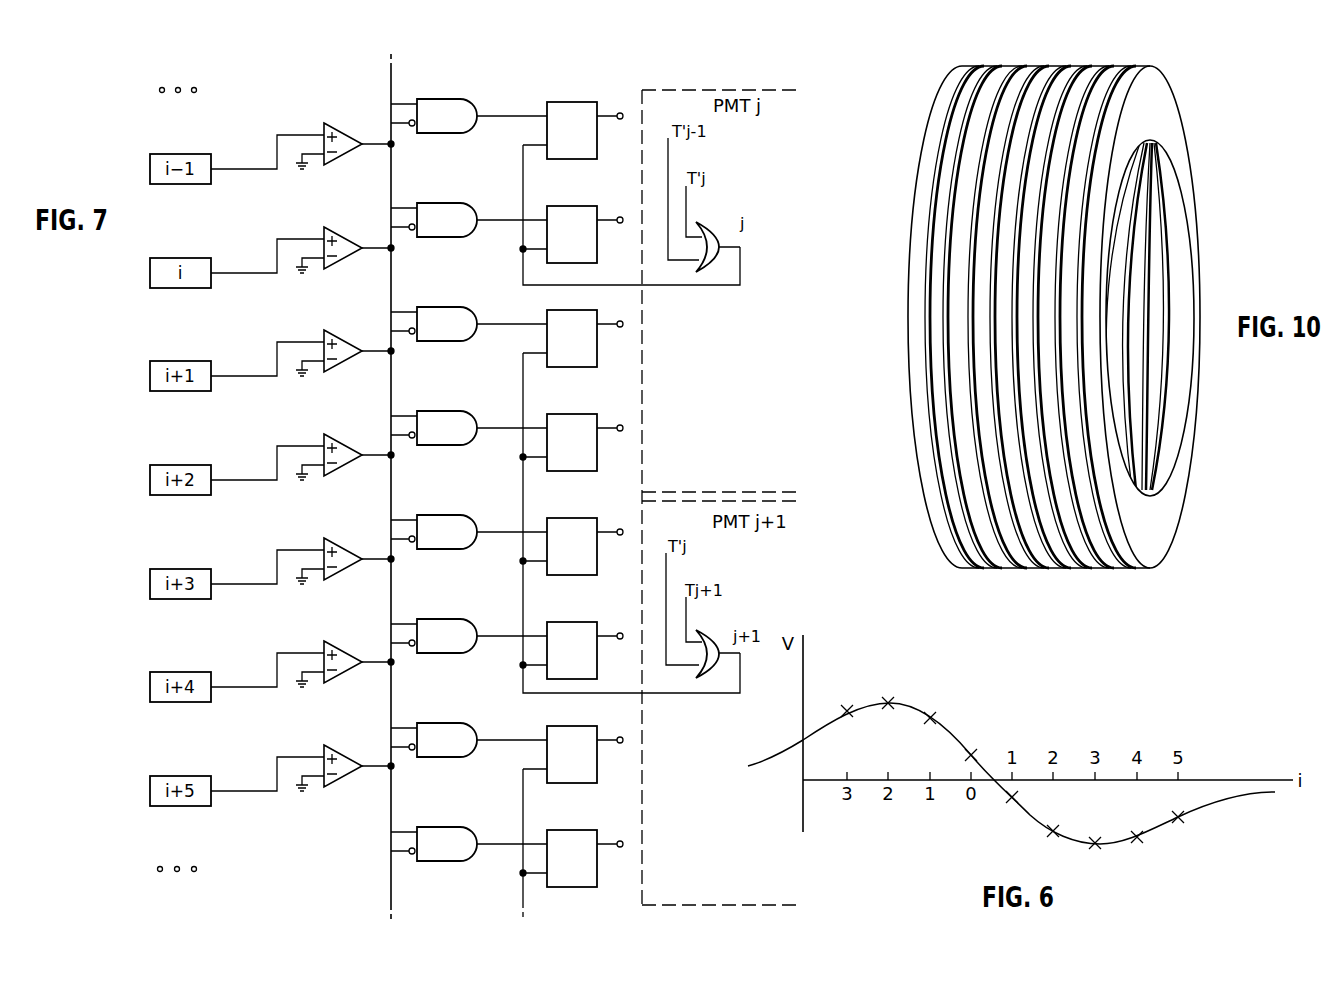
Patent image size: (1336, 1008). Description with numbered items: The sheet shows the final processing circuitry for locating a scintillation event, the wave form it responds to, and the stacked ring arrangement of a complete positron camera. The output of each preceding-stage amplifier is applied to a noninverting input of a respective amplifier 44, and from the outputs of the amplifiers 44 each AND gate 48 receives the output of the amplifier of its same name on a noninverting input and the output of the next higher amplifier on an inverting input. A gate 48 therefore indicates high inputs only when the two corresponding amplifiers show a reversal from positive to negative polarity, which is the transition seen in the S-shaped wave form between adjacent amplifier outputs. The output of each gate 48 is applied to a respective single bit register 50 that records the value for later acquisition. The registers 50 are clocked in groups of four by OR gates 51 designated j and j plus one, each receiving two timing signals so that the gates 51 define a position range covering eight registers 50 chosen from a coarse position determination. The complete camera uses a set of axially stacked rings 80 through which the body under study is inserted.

In FIG. 7, the amplifier 44 is at (356, 787).
In FIG. 7, the AND gate 48 is at (437, 813).
In FIG. 7, the single bit register 50 is at (600, 870).
In FIG. 7, the OR gate 51 is at (703, 634).
In FIG. 10, the ring 80 is at (1118, 66).